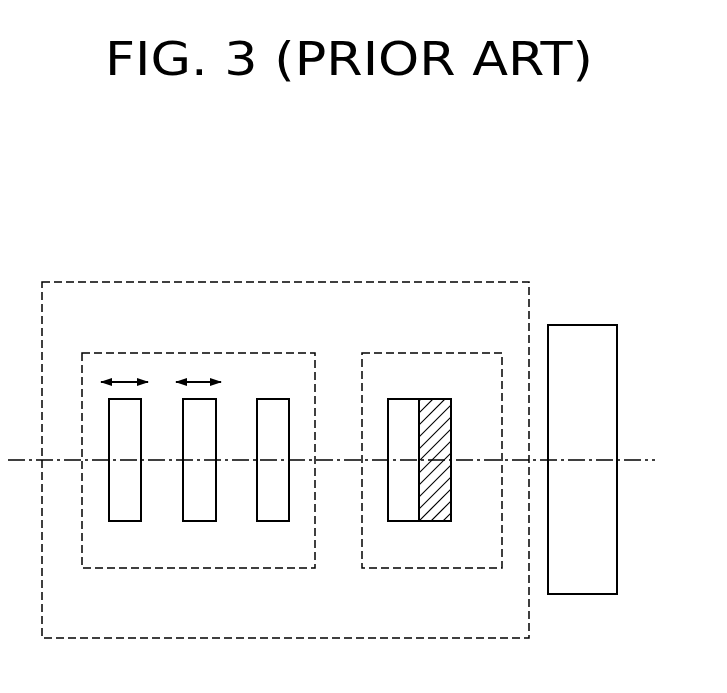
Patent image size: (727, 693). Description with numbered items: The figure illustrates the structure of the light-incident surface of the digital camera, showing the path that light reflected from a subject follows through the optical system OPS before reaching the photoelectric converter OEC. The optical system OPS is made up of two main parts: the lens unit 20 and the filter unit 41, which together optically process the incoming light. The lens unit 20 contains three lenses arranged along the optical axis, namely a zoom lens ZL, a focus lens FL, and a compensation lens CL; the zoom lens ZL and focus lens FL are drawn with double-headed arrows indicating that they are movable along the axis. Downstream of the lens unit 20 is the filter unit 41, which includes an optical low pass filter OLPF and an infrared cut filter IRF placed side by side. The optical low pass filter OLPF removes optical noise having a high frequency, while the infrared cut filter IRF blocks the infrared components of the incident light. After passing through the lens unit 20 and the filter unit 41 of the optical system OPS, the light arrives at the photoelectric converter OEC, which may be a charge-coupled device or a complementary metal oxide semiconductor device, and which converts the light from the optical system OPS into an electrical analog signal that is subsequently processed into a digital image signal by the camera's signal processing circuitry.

The optical system OPS is at (285, 281).
The lens unit 20 is at (200, 352).
The filter unit 41 is at (436, 352).
The zoom lens ZL is at (125, 521).
The focus lens FL is at (199, 521).
The compensation lens CL is at (271, 521).
The optical low pass filter OLPF is at (400, 521).
The infrared cut filter IRF is at (440, 521).
The photoelectric converter OEC is at (582, 325).